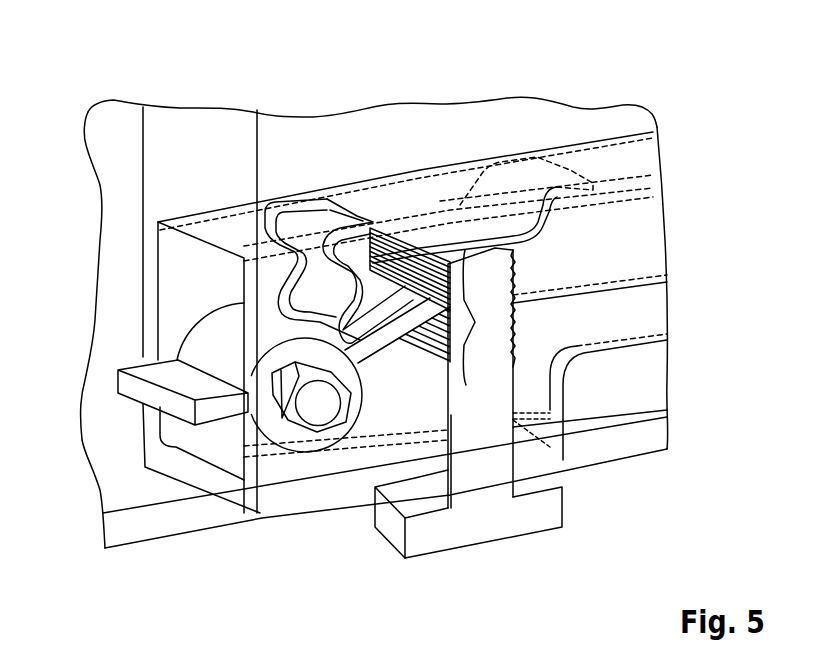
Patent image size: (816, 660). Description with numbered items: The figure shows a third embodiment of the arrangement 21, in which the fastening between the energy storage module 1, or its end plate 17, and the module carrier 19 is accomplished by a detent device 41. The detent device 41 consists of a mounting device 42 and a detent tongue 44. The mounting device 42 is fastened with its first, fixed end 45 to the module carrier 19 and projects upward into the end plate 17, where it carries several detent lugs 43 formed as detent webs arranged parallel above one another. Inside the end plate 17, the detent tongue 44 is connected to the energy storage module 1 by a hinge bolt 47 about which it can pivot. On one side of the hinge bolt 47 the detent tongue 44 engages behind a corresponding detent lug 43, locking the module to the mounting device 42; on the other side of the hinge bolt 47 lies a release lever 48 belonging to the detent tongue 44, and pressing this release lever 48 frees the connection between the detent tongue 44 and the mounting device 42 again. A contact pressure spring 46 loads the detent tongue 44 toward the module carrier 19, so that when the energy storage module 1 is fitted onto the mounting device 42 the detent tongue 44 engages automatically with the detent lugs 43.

The energy storage module 1 is at (166, 91).
The end plate 17 is at (193, 172).
The module carrier 19 is at (165, 520).
The arrangement 21 is at (688, 222).
The detent device 41 is at (527, 444).
The mounting device 42 is at (493, 385).
The detent lugs 43 is at (442, 306).
The detent tongue 44 is at (378, 345).
The first (fixed) end 45 is at (493, 512).
The contact pressure spring 46 is at (302, 212).
The hinge bolt 47 is at (323, 412).
The release lever 48 is at (185, 383).